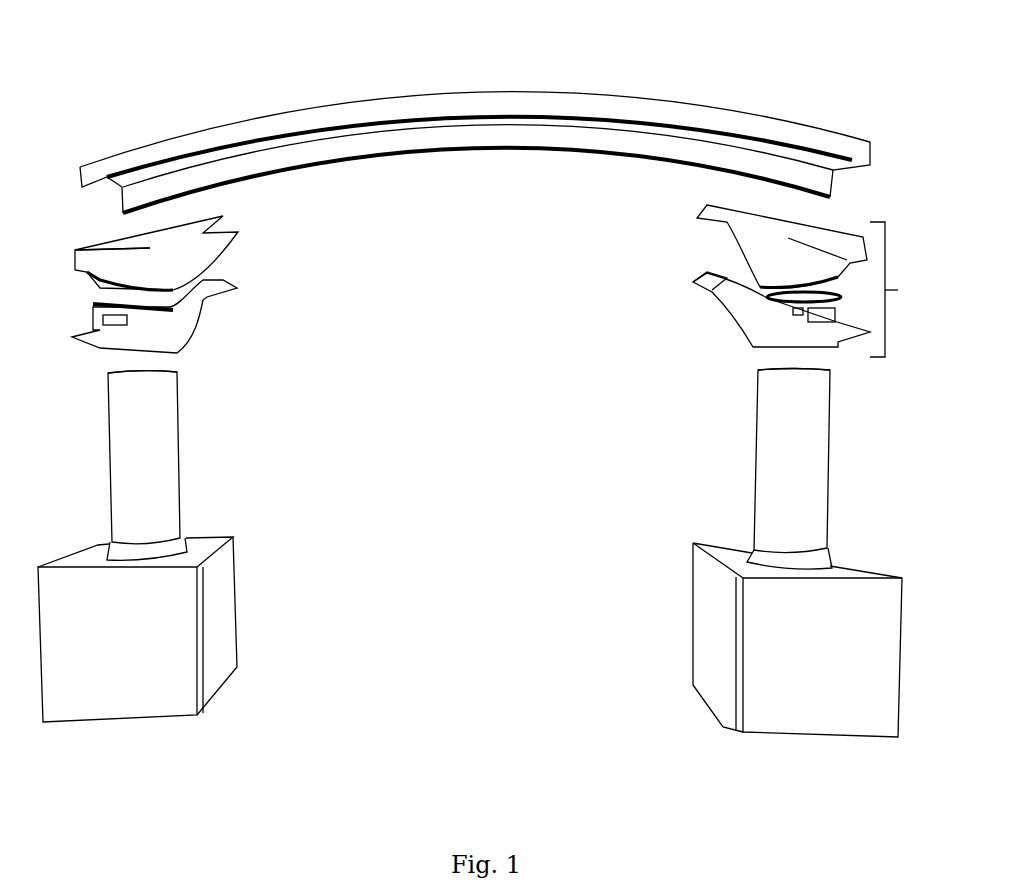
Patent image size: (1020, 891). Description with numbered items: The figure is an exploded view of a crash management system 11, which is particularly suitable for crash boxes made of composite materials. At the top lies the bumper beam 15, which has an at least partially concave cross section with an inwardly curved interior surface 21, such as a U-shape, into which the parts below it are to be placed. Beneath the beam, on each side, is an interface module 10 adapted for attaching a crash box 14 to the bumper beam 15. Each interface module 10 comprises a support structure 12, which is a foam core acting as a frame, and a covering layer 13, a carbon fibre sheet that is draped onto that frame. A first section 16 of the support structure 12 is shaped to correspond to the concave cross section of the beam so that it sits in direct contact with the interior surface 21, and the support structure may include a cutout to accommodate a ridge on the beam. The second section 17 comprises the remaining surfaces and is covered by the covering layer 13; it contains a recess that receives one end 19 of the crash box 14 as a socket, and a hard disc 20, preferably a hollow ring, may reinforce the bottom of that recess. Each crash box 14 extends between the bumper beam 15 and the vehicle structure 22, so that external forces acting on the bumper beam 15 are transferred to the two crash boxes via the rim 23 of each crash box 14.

The interface module 10 is at (812, 281).
The crash management system 11 is at (483, 600).
The support structure 12 is at (212, 253).
The covering layer 13 is at (205, 327).
The crash box 14 is at (153, 452).
The bumper beam 15 is at (495, 105).
The first section of support structure 16 is at (92, 232).
The second section of support structure 17 is at (148, 270).
The end of crash box 19 is at (182, 387).
The disc 20 is at (97, 312).
The interior surface of bumper beam 21 is at (520, 130).
The vehicle structure 22 is at (153, 672).
The rim of crash box 23 is at (185, 503).